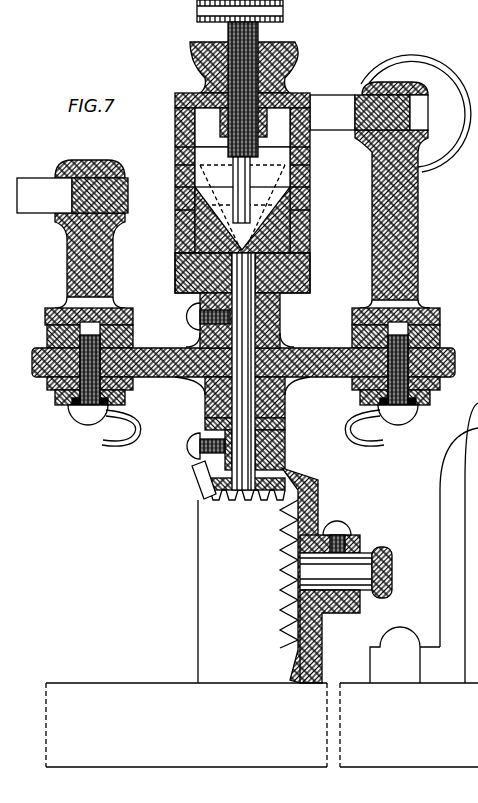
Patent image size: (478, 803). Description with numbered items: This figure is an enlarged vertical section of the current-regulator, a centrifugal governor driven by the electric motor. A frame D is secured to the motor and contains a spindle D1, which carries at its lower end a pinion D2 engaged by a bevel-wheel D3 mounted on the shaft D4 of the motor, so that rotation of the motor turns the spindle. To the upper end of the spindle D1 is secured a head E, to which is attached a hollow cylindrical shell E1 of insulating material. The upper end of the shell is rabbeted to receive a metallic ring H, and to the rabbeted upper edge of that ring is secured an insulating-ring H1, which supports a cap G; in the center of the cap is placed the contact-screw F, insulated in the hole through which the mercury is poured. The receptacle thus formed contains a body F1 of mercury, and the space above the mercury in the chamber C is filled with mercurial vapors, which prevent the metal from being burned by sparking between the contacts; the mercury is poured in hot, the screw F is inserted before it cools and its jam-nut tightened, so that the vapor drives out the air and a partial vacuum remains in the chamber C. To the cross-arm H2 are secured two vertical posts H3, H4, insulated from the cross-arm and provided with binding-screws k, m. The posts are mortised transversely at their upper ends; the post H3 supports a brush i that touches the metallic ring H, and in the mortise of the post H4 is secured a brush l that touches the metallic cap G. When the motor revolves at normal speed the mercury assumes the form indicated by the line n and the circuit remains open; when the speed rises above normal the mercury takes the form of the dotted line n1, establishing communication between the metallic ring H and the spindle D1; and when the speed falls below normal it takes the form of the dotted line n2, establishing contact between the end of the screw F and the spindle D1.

The cap G is at (297, 92).
The brush l is at (369, 112).
The chamber C is at (242, 147).
The insulating-ring H1 is at (311, 160).
The metallic ring H is at (311, 197).
The brush i is at (85, 195).
The dotted line n1 is at (200, 180).
The contact-screw F is at (250, 189).
The dotted line n2 is at (259, 215).
The line n is at (226, 248).
The body of mercury F1 is at (172, 242).
The hollow cylindrical shell E1 is at (312, 246).
The vertical post H3 is at (105, 268).
The vertical post H4 is at (420, 246).
The head E is at (280, 312).
The cross-arm H2 is at (308, 348).
The frame D is at (284, 400).
The binding-screw k is at (94, 384).
The binding-screw m is at (392, 384).
The pinion D2 is at (193, 493).
The spindle D1 is at (224, 500).
The bevel-wheel D3 is at (318, 494).
The shaft D4 is at (386, 572).